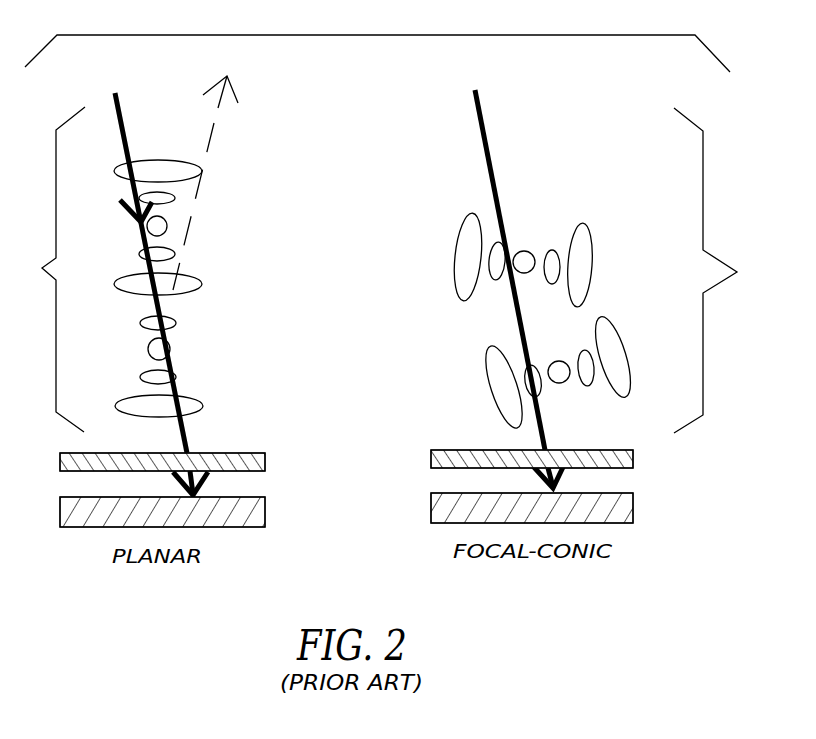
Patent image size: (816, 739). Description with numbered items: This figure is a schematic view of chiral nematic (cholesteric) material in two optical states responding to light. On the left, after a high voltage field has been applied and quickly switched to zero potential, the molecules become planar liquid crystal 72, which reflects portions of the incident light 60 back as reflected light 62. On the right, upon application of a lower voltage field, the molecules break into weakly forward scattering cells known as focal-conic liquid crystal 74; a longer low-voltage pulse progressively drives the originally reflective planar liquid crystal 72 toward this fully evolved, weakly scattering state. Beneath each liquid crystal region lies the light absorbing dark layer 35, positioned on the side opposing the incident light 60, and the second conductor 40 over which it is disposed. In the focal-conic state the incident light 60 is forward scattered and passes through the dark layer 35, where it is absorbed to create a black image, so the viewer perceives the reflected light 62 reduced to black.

The dark layer 35 is at (60, 466).
The second conductor 40 is at (60, 508).
The incident light 60 is at (123, 118).
The reflected light 62 is at (213, 133).
The planar liquid crystal 72 is at (47, 269).
The focal-conic liquid crystal 74 is at (726, 270).